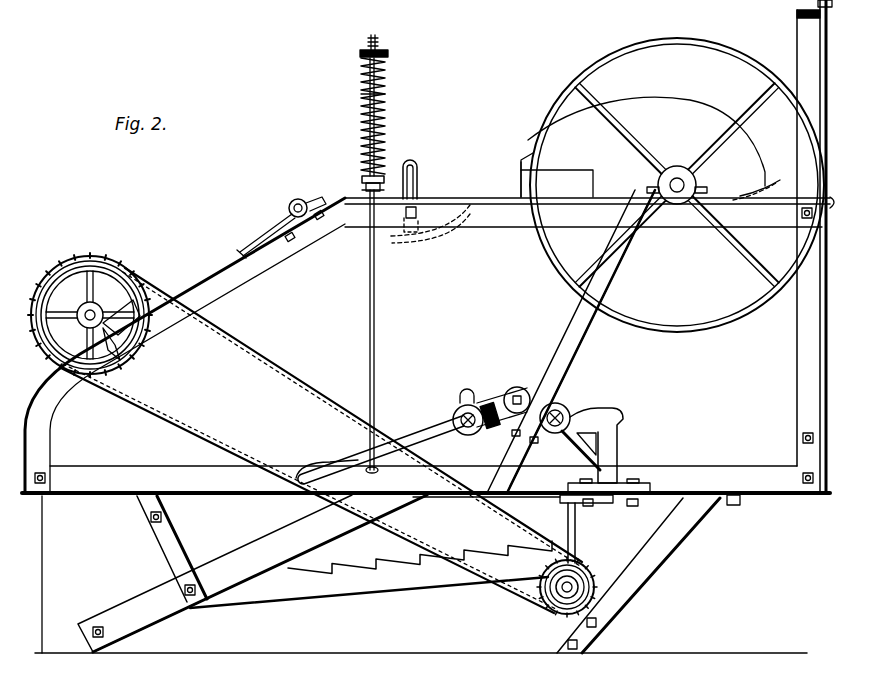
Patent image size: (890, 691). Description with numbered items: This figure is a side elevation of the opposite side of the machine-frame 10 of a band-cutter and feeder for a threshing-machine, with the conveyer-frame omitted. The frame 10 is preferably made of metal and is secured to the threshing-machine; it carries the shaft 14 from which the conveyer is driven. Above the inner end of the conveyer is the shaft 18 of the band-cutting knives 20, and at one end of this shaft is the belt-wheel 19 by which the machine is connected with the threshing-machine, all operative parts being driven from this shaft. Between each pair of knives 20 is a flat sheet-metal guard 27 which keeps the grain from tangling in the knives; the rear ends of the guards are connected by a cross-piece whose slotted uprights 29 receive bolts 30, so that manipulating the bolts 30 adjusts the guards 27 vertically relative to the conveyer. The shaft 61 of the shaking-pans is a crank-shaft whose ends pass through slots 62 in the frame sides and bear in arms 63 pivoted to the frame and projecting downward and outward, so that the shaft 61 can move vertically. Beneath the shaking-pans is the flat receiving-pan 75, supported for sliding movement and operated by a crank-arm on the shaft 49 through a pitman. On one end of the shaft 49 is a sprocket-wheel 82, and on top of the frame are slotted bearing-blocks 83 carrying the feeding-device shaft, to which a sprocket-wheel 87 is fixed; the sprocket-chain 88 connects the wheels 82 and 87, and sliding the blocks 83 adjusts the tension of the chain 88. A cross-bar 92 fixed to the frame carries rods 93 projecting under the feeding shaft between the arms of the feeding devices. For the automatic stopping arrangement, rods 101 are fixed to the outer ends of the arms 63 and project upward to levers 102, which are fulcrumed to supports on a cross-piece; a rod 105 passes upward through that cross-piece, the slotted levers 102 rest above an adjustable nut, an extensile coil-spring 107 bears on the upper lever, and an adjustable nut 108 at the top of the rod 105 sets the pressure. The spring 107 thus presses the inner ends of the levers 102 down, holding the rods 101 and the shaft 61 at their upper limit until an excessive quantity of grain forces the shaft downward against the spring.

The machine-frame 10 is at (428, 326).
The shaft 14 is at (572, 414).
The shaft of the band-cutting knives 18 is at (673, 182).
The belt-wheel 19 is at (545, 133).
The band-cutting knives 20 is at (643, 147).
The guard 27 is at (772, 182).
The slotted uprights 29 is at (419, 176).
The bolts 30 is at (417, 212).
The shaft 49 is at (558, 596).
The shaft of the shaking-pans 61 is at (466, 433).
The slots 62 is at (474, 397).
The arms 63 is at (421, 430).
The receiving-pan 75 is at (375, 582).
The sprocket-wheel 82 is at (600, 560).
The bearing-blocks 83 is at (117, 331).
The sprocket-wheel 87 is at (146, 350).
The sprocket-chain 88 is at (300, 376).
The cross-bar 92 is at (289, 206).
The rods 93 is at (258, 248).
The rods 101 is at (375, 364).
The levers 102 is at (361, 179).
The rod 105 is at (387, 133).
The extensile coil-spring 107 is at (387, 93).
The adjustable nut 108 is at (386, 52).